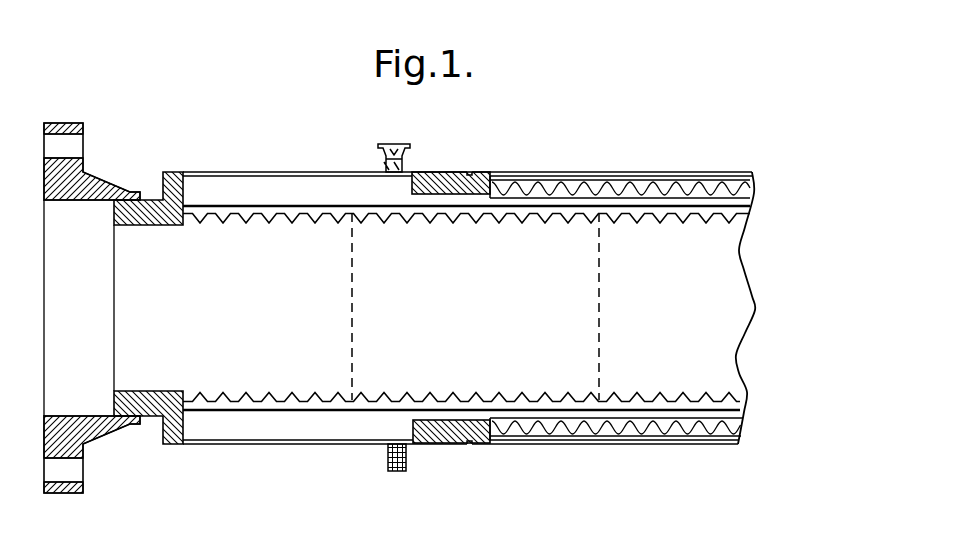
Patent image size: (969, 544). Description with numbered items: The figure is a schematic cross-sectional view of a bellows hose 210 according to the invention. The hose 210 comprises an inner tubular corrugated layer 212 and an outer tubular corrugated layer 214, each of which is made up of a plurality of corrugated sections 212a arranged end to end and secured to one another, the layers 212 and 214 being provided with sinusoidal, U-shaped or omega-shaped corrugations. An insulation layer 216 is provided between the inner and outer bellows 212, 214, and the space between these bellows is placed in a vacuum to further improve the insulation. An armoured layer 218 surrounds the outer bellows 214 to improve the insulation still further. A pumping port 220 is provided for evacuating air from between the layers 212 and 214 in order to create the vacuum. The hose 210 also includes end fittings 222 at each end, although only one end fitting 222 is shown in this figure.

The bellows hose 210 is at (702, 100).
The inner tubular corrugated layer 212 is at (603, 389).
The corrugated section 212a is at (228, 392).
The outer tubular corrugated layer 214 is at (522, 216).
The insulation layer 216 is at (723, 402).
The armoured layer 218 is at (740, 172).
The pumping port 220 is at (411, 146).
The end fitting 222 is at (102, 184).